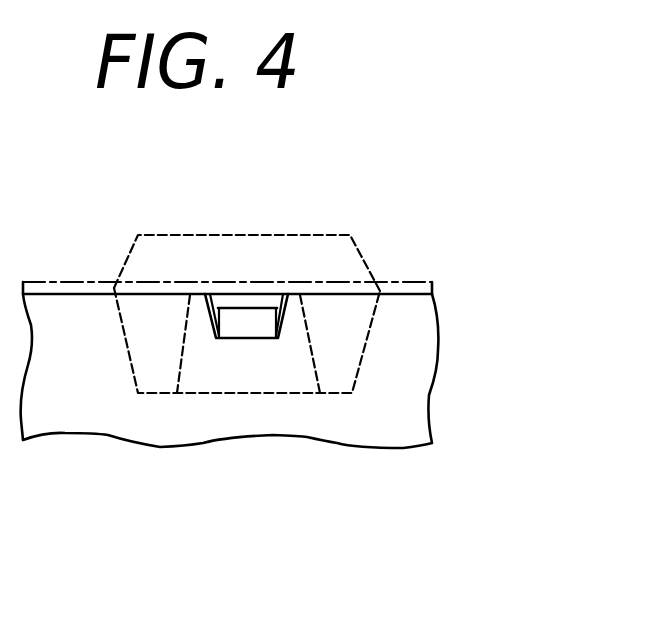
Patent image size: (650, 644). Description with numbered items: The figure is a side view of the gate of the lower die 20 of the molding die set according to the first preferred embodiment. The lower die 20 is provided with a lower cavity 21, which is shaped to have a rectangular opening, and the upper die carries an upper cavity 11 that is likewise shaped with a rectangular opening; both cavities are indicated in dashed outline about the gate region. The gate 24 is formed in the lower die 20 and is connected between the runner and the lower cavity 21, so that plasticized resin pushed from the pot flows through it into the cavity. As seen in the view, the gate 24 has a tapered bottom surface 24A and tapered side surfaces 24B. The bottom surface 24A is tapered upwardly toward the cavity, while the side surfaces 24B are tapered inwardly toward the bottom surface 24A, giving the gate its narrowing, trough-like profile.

The upper cavity 11 is at (360, 250).
The lower die 20 is at (432, 403).
The lower cavity 21 is at (367, 342).
The gate 24 is at (243, 347).
The tapered bottom surface 24A is at (247, 317).
The tapered side surfaces 24B is at (214, 303).